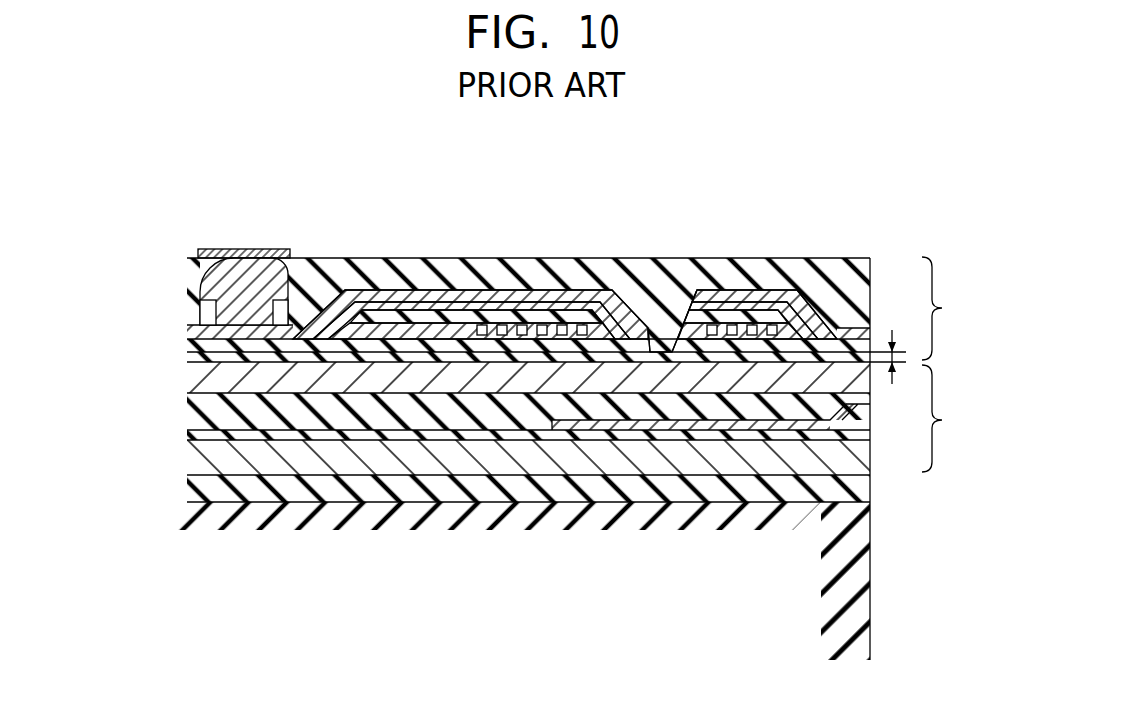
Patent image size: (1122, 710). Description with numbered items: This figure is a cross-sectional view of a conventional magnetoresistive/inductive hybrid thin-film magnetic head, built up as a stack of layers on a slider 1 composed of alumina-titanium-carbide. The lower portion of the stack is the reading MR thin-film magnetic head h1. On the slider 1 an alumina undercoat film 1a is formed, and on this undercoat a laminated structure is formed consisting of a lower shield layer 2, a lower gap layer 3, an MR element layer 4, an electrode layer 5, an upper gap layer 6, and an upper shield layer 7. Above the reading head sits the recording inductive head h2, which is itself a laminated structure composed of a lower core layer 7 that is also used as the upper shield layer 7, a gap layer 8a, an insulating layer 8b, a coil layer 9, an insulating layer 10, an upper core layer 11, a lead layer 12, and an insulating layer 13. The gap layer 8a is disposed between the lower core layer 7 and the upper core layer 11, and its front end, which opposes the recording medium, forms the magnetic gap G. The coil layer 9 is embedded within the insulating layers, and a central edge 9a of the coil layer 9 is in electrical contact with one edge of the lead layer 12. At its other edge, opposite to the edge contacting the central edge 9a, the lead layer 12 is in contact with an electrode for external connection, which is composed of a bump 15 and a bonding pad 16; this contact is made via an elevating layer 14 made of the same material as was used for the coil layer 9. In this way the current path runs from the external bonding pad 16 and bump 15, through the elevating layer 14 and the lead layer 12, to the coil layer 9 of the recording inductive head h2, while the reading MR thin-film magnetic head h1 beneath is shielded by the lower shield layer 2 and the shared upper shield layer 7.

The slider 1 is at (855, 570).
The alumina undercoat film 1a is at (850, 483).
The lower shield layer 2 is at (613, 450).
The lower gap layer 3 is at (412, 432).
The MR element layer 4 is at (820, 474).
The electrode layer 5 is at (708, 428).
The upper gap layer 6 is at (483, 410).
The upper shield layer 7 is at (540, 375).
The gap layer 8a is at (388, 335).
The insulating layer 8b is at (435, 303).
The coil layer 9 is at (540, 326).
The central edge of the coil layer 9a is at (582, 322).
The insulating layer 10 is at (352, 320).
The upper core layer 11 is at (655, 310).
The lead layer 12 is at (504, 300).
The insulating layer 13 is at (416, 280).
The elevating layer 14 is at (208, 331).
The bump 15 is at (230, 283).
The bonding pad 16 is at (245, 258).
The magnetic gap G is at (900, 352).
The reading MR thin-film magnetic head h1 is at (947, 418).
The recording inductive head h2 is at (947, 308).